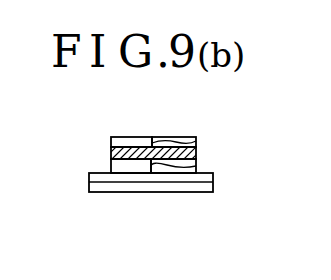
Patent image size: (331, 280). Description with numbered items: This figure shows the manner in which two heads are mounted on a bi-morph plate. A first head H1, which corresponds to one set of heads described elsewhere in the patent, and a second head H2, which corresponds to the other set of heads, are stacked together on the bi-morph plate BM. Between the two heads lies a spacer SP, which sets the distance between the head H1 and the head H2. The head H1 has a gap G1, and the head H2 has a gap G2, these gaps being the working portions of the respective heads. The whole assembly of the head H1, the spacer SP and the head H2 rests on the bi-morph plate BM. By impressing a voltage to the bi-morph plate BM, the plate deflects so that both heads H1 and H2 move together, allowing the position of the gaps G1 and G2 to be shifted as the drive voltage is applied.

The head H1 is at (127, 138).
The gap G1 is at (172, 138).
The spacer SP is at (196, 155).
The head H2 is at (110, 168).
The gap G2 is at (196, 166).
The bi-morph plate BM is at (174, 193).